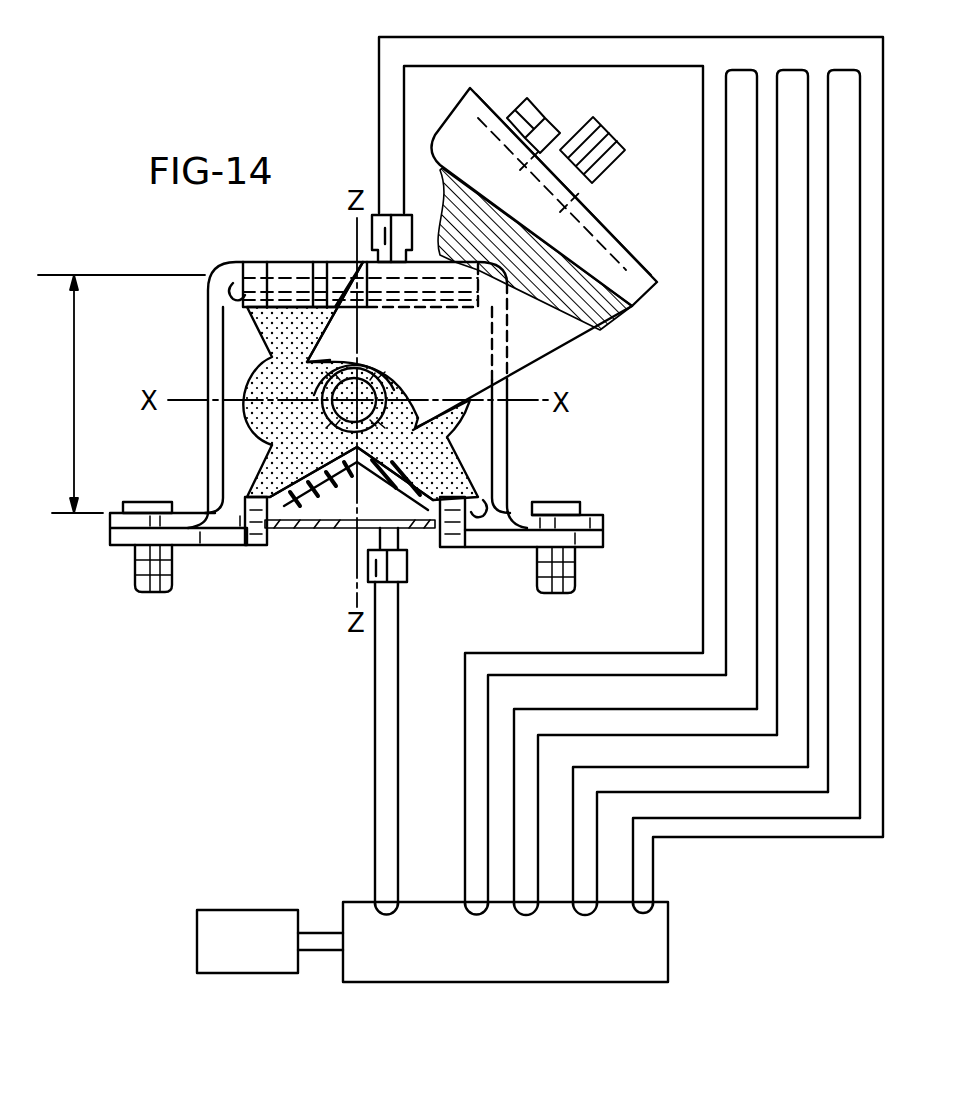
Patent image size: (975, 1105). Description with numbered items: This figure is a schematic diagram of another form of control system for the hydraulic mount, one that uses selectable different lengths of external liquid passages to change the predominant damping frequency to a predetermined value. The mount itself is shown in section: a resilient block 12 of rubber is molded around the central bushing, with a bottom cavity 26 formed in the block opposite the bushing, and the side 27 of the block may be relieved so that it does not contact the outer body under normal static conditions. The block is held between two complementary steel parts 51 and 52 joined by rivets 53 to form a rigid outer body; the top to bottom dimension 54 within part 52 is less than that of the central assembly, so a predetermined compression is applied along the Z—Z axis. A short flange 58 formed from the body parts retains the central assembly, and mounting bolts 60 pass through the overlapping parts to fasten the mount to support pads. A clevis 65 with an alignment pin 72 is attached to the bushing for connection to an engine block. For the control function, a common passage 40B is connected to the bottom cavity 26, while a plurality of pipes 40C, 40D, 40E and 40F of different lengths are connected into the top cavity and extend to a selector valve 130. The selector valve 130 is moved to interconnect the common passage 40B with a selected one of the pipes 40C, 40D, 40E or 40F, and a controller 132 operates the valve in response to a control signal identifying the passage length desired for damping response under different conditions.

The resilient block 12 is at (455, 464).
The bottom cavity 26 is at (345, 562).
The side of the block 27 is at (242, 435).
The common passage 40B is at (373, 765).
The pipe 40C is at (702, 172).
The pipe 40D is at (746, 88).
The pipe 40E is at (713, 795).
The pipe 40F is at (795, 840).
The outer body part 51 is at (225, 548).
The outer body part 52 is at (208, 335).
The rivets 53 is at (185, 510).
The top to bottom dimension 54 is at (121, 394).
The flange 58 is at (318, 270).
The mounting bolts 60 is at (135, 570).
The clevis 65 is at (590, 332).
The alignment pin 72 is at (540, 118).
The selector valve 130 is at (456, 983).
The controller 132 is at (252, 973).